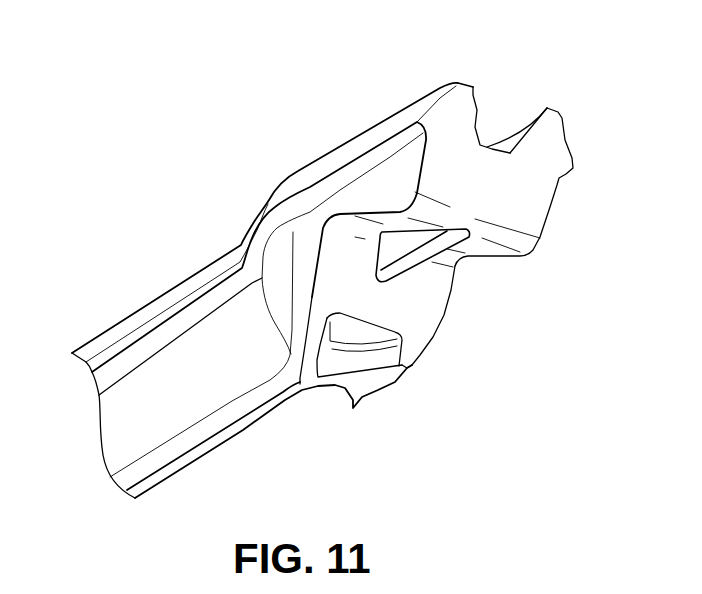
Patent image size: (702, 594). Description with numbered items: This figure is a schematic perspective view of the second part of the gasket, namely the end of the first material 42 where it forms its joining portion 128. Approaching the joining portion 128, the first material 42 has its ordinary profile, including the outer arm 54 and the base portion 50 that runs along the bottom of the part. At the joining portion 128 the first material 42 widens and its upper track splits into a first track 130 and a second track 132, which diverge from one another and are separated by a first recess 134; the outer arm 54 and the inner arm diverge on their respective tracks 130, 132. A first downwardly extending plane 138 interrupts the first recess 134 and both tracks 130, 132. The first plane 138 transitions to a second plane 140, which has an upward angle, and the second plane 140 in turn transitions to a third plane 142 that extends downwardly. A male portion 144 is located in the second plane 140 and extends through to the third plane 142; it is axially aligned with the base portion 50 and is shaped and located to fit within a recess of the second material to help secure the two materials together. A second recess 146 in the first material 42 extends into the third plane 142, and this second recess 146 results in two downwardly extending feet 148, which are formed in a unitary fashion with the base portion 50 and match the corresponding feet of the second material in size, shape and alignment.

The first material 42 is at (210, 266).
The base portion 50 is at (120, 480).
The outer arm 54 is at (83, 362).
The joining portion 128 is at (540, 255).
The first track 130 is at (548, 108).
The second track 132 is at (468, 79).
The first recess 134 is at (500, 114).
The first downwardly extending plane 138 is at (535, 200).
The second plane 140 is at (480, 247).
The third plane 142 is at (417, 327).
The male portion 144 is at (415, 258).
The second recess 146 is at (362, 325).
The feet 148 is at (312, 336).